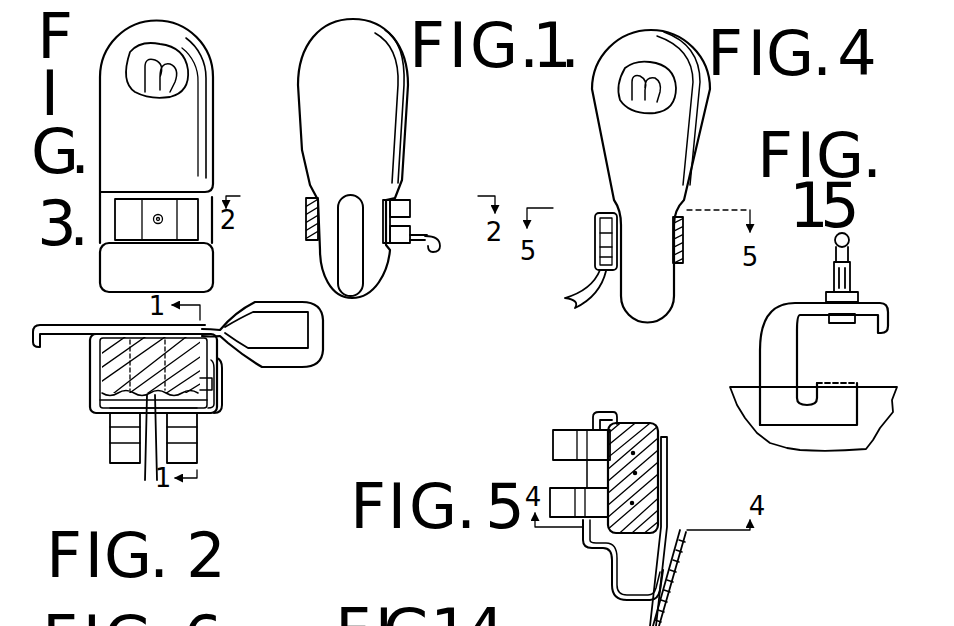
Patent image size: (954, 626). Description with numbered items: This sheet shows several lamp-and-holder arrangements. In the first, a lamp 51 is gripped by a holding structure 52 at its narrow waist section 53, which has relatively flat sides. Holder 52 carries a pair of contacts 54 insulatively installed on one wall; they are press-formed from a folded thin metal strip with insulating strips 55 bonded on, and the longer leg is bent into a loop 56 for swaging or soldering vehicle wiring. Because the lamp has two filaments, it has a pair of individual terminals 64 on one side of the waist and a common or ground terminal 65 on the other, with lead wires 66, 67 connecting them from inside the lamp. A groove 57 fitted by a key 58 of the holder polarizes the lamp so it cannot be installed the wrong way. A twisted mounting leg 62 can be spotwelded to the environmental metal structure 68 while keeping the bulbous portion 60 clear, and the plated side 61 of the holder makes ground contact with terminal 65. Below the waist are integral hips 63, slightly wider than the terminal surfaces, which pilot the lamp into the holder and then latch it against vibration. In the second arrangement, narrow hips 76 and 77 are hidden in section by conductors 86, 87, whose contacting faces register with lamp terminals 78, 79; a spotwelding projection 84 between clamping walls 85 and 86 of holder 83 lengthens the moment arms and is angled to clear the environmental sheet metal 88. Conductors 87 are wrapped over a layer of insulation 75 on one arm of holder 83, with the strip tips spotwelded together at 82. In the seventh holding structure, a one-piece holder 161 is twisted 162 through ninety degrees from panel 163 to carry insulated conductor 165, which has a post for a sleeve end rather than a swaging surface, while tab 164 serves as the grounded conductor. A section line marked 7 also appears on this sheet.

In FIG. 5, the hatched pad section 7 is at (608, 500).
In FIG. 3, the lamp 51 is at (138, 157).
In FIG. 1, the lamp 51 is at (333, 132).
In FIG. 2, the lamp 51 is at (110, 363).
In FIG. 1, the holding structure 52 is at (306, 202).
In FIG. 2, the holding structure 52 is at (115, 349).
In FIG. 3, the waist section 53 is at (208, 193).
In FIG. 1, the waist section 53 is at (304, 196).
In FIG. 2, the waist section 53 is at (100, 380).
In FIG. 1, the contacts 54 is at (412, 199).
In FIG. 2, the contacts 54 is at (113, 432).
In FIG. 1, the insulating strips 55 is at (410, 197).
In FIG. 2, the insulating strips 55 is at (112, 420).
In FIG. 1, the loop 56 is at (437, 248).
In FIG. 2, the loop 56 is at (125, 461).
In FIG. 2, the groove 57 is at (214, 360).
In FIG. 2, the key 58 is at (218, 382).
In FIG. 3, the bulbous portion 60 is at (208, 54).
In FIG. 1, the bulbous portion 60 is at (312, 50).
In FIG. 1, the plated side 61 is at (306, 217).
In FIG. 2, the plated side 61 is at (204, 407).
In FIG. 2, the twisted mounting leg 62 is at (306, 325).
In FIG. 3, the hips 63 is at (182, 245).
In FIG. 1, the hips 63 is at (313, 250).
In FIG. 2, the hips 63 is at (110, 397).
In FIG. 1, the individual terminals 64 is at (381, 212).
In FIG. 2, the individual terminals 64 is at (150, 482).
In FIG. 3, the common terminal 65 is at (198, 223).
In FIG. 1, the common terminal 65 is at (315, 252).
In FIG. 2, the common terminal 65 is at (113, 326).
In FIG. 2, the lead wire 66 is at (152, 365).
In FIG. 2, the lead wire 67 is at (162, 363).
In FIG. 2, the environmental metal structure 68 is at (309, 345).
In FIG. 4, the insulation layer 75 is at (596, 212).
In FIG. 5, the insulation layer 75 is at (592, 432).
In FIG. 4, the hip 76 is at (614, 285).
In FIG. 4, the hip 77 is at (677, 268).
In FIG. 4, the lamp terminal 78 is at (617, 222).
In FIG. 5, the lamp terminal 78 is at (612, 505).
In FIG. 4, the lamp terminal 79 is at (685, 222).
In FIG. 5, the lamp terminal 79 is at (669, 482).
In FIG. 4, the spotwelded tips 82 is at (603, 260).
In FIG. 5, the holder 83 is at (597, 541).
In FIG. 5, the spotwelding projection 84 is at (674, 573).
In FIG. 4, the clamping wall 85 is at (599, 240).
In FIG. 5, the clamping wall 85 is at (600, 417).
In FIG. 4, the clamping wall 86 is at (685, 240).
In FIG. 5, the clamping wall 86 is at (662, 468).
In FIG. 4, the conductors 87 is at (604, 214).
In FIG. 5, the conductors 87 is at (573, 487).
In FIG. 5, the environmental sheet metal 88 is at (681, 550).
In FIG. 15, the holder 161 is at (760, 370).
In FIG. 15, the twist 162 is at (782, 323).
In FIG. 15, the panel 163 is at (808, 441).
In FIG. 15, the tab 164 is at (855, 383).
In FIG. 15, the insulated conductor 165 is at (851, 327).